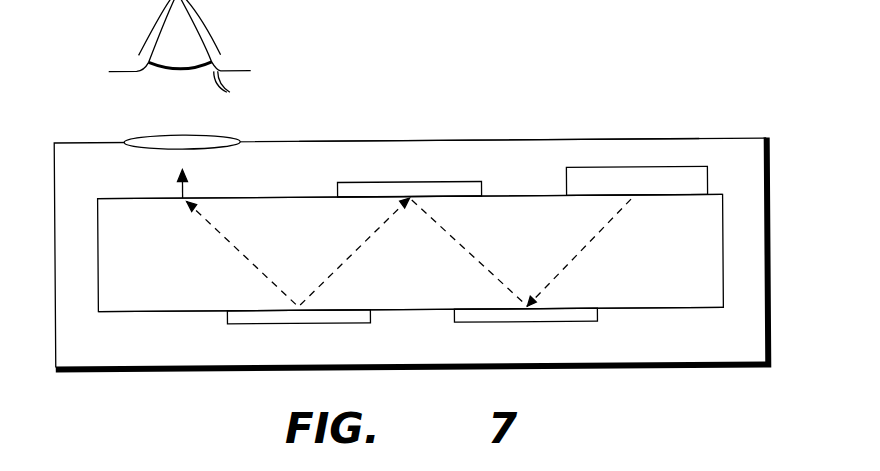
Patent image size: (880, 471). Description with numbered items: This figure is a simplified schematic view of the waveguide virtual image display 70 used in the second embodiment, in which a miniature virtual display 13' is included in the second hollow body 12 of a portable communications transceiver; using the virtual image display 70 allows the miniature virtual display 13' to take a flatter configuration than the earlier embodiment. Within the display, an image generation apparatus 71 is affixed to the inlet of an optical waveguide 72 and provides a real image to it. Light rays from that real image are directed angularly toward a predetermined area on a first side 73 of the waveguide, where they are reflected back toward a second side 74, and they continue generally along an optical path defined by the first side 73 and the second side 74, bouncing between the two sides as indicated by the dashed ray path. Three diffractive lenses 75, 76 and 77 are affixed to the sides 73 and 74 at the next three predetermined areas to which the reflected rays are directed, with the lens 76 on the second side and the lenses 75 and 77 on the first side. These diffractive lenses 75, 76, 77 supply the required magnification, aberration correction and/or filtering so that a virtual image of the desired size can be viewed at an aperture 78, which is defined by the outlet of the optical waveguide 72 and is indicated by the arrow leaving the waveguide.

The second hollow body 12 is at (505, 140).
The miniature virtual display 13' is at (411, 214).
The virtual image display 70 is at (131, 355).
The image generation apparatus 71 is at (708, 180).
The optical waveguide 72 is at (723, 237).
The first side 73 is at (660, 310).
The second side 74 is at (530, 196).
The diffractive lens 75 is at (527, 323).
The diffractive lens 76 is at (338, 186).
The diffractive lens 77 is at (298, 322).
The aperture 78 is at (115, 196).